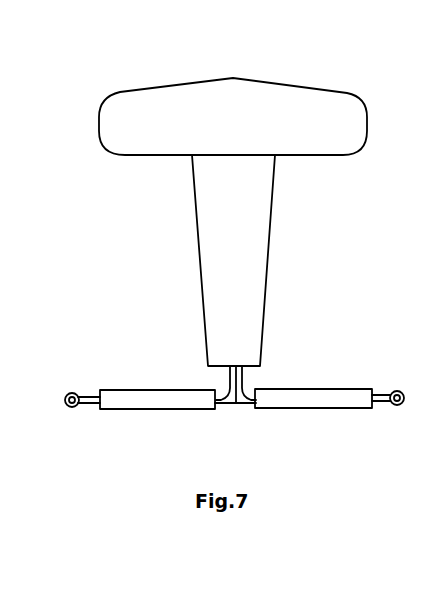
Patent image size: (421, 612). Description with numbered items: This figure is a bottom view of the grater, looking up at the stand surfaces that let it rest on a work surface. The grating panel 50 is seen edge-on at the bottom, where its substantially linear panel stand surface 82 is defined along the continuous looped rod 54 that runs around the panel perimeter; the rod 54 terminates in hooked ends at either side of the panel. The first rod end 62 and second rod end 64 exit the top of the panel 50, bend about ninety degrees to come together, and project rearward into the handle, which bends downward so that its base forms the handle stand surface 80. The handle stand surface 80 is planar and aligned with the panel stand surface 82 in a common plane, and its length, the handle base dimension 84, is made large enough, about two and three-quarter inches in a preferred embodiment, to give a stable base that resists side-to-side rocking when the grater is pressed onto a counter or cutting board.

The grating panel 50 is at (220, 406).
The continuous looped rod 54 is at (95, 400).
The first rod end 62 is at (250, 385).
The second rod end 64 is at (207, 380).
The handle stand surface 80 is at (268, 117).
The panel stand surface 82 is at (308, 398).
The handle base dimension 84 is at (367, 110).